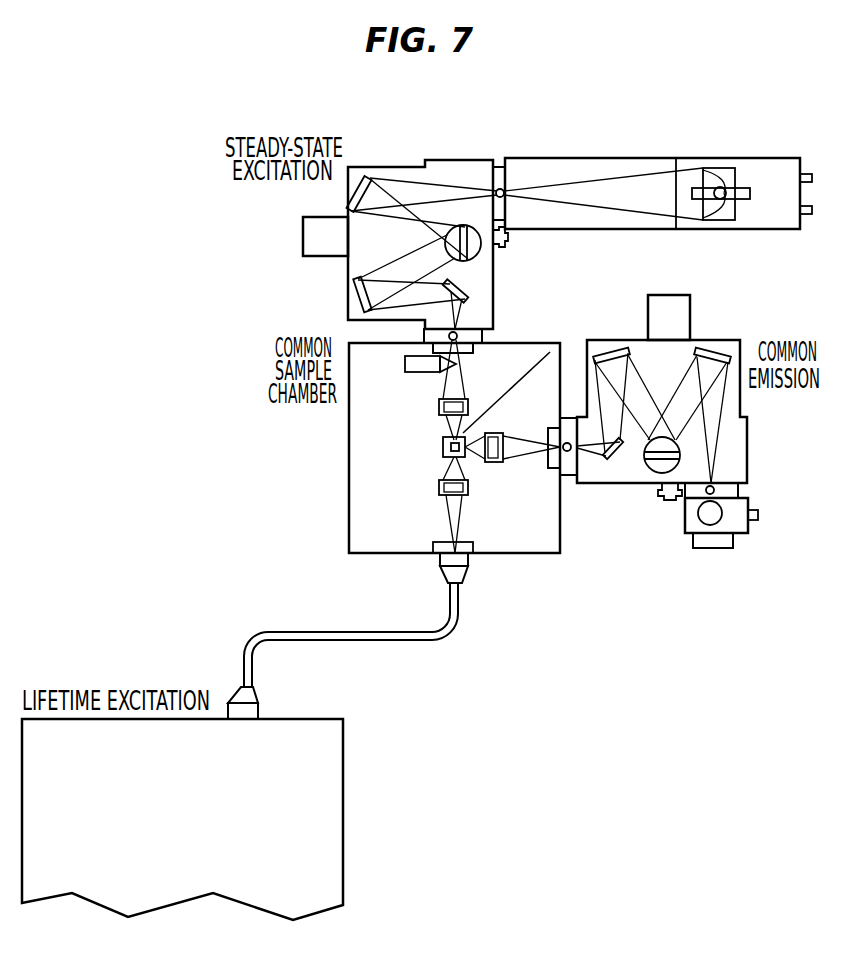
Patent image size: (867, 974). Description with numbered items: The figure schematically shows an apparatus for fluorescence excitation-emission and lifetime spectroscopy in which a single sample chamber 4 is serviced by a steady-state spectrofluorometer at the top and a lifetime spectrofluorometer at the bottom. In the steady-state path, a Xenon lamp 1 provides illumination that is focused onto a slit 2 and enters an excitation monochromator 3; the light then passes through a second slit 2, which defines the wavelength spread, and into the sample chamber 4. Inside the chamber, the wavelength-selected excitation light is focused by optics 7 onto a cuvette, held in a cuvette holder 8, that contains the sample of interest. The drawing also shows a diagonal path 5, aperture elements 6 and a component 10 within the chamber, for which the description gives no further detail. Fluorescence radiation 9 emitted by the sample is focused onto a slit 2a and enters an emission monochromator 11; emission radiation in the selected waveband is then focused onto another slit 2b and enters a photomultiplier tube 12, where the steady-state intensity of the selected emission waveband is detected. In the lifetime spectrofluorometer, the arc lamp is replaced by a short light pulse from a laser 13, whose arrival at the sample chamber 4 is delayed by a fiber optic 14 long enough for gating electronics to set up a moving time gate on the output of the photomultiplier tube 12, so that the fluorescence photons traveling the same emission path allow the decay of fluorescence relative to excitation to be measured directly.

The Xenon lamp 1 is at (771, 204).
The slit 2 is at (496, 166).
The slit 2a is at (570, 477).
The slit 2b is at (742, 493).
The excitation monochromator 3 is at (368, 254).
The sample chamber 4 is at (349, 446).
The lifetime excitation beam path 5 is at (516, 371).
The aperture / shutter 6 is at (472, 354).
The optics 7 is at (440, 410).
The cuvette holder 8 is at (443, 450).
The fluorescence radiation 9 is at (530, 417).
The beam steering optic 10 is at (418, 372).
The emission monochromator 11 is at (652, 369).
The photomultiplier tube 12 is at (738, 535).
The laser 13 is at (345, 754).
The fiber optic 14 is at (362, 637).